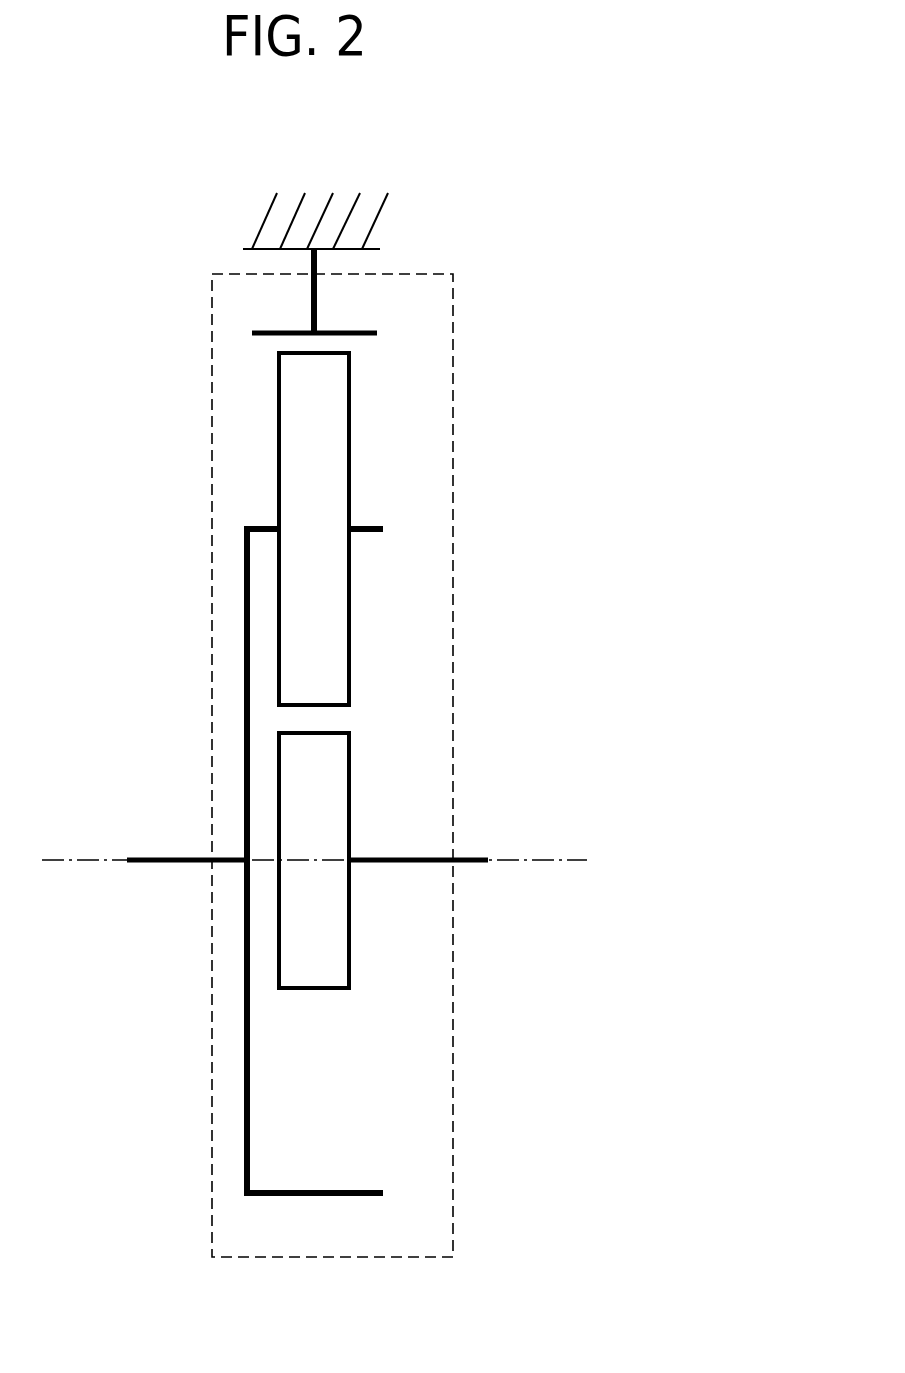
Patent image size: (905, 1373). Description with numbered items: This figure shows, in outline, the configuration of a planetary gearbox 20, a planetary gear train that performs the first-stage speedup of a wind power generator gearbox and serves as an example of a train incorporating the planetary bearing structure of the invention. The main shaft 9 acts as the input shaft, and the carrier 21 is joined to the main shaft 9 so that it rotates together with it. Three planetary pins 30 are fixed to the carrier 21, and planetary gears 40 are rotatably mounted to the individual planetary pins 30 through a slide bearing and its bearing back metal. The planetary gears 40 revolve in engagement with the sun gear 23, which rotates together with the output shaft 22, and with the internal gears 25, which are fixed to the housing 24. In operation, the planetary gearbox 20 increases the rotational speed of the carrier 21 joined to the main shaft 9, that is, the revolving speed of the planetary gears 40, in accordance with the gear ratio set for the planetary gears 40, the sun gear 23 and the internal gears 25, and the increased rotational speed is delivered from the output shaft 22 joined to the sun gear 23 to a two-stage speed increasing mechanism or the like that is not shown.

The main shaft 9 is at (165, 857).
The planetary gearbox 20 is at (484, 250).
The carrier 21 is at (247, 608).
The output shaft 22 is at (480, 865).
The sun gear 23 is at (350, 767).
The housing 24 is at (262, 250).
The internal gears 25 is at (377, 334).
The planetary pins 30 is at (370, 526).
The planetary gears 40 is at (279, 404).